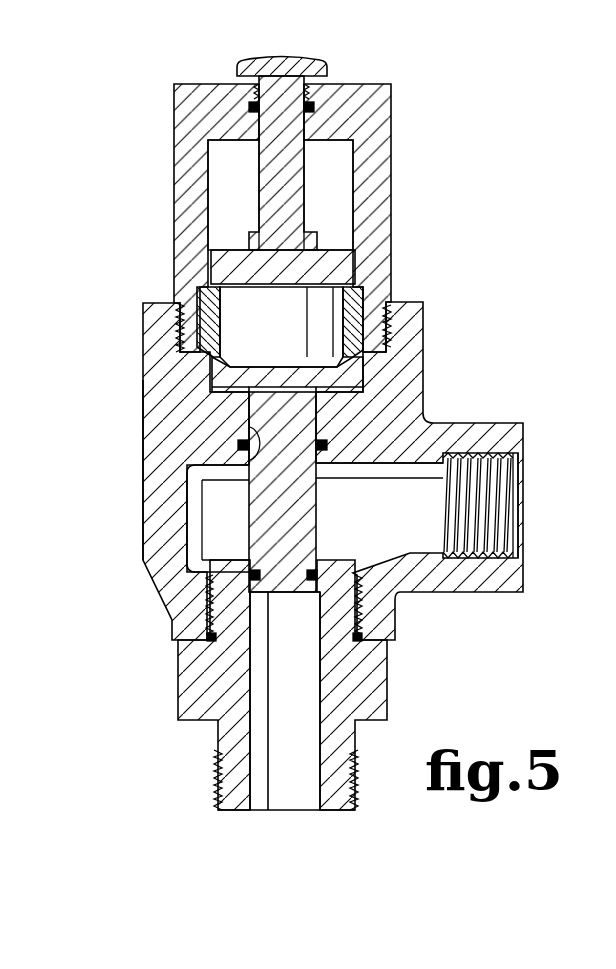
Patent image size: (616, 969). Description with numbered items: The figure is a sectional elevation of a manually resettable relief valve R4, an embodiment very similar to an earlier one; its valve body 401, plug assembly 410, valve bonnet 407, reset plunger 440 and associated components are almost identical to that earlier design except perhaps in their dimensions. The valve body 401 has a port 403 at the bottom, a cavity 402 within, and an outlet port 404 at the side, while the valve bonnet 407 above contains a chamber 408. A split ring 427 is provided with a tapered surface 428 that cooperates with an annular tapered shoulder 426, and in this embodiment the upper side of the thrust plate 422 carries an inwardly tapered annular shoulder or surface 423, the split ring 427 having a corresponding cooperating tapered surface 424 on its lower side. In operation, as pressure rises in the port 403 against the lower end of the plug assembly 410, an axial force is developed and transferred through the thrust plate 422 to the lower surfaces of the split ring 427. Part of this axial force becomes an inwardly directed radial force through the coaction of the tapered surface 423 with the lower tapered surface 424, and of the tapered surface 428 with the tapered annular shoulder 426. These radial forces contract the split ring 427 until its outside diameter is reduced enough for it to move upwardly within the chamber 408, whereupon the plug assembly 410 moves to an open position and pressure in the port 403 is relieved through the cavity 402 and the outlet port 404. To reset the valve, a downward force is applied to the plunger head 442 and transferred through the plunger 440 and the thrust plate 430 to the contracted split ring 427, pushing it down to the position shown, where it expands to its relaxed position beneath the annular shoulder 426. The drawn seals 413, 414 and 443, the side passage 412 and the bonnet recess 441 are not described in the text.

The valve body 401 is at (168, 588).
The cavity 402 is at (193, 518).
The port 403 is at (312, 797).
The outlet port 404 is at (502, 540).
The valve bonnet 407 is at (370, 184).
The chamber 408 is at (333, 224).
The plug assembly 410 is at (330, 537).
The inlet port 412 is at (245, 468).
The O-ring seal 413 is at (327, 447).
The lower seal 414 is at (312, 596).
The thrust plate 422 is at (222, 381).
The inwardly tapered annular shoulder or surface 423 is at (237, 360).
The tapered surface 424 is at (203, 362).
The annular tapered shoulder 426 is at (372, 308).
The split ring 427 is at (205, 297).
The tapered surface 428 is at (348, 296).
The thrust plate 430 is at (343, 270).
The reset plunger 440 is at (292, 201).
The chamber 441 is at (244, 186).
The plunger head 442 is at (290, 56).
The seal 443 is at (306, 114).
The relief valve R4 is at (134, 499).